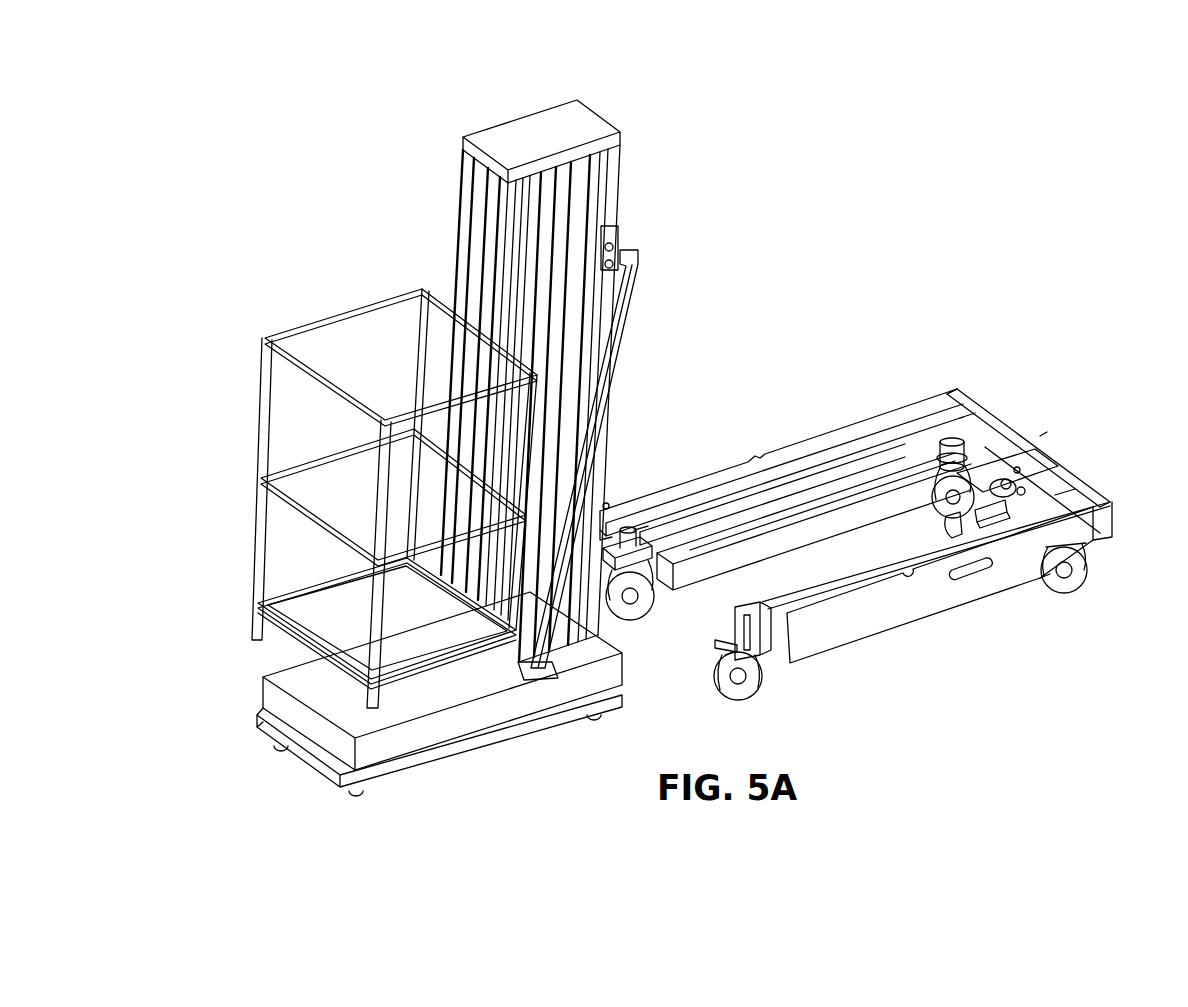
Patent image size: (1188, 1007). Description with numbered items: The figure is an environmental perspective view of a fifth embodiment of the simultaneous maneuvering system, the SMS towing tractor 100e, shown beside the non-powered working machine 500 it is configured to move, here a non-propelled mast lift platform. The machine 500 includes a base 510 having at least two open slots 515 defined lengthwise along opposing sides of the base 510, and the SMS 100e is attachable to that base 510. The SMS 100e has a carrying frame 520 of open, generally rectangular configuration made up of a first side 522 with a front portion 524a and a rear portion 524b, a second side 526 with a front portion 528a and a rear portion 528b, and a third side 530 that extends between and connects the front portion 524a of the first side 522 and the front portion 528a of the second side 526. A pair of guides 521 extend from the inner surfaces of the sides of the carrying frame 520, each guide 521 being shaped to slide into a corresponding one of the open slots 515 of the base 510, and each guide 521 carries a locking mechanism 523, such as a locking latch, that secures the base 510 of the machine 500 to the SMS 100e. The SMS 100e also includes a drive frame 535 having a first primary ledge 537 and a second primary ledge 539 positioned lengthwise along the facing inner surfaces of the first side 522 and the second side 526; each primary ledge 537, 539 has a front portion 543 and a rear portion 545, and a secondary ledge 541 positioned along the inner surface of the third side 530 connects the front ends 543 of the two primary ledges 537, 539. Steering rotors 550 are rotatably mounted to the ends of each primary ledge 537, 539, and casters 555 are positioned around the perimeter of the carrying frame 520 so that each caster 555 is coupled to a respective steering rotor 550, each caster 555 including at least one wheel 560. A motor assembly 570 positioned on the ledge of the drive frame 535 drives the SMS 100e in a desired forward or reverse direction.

The non-powered working machine 500 is at (236, 126).
The base 510 is at (457, 732).
The open slots 515 is at (258, 717).
The simultaneous maneuvering system (SMS towing tractor) 100e is at (799, 315).
The carrying frame 520 is at (1003, 609).
The guides 521 is at (700, 553).
The first side 522 is at (850, 620).
The locking mechanism 523 is at (682, 571).
The front portion of the first side 524a is at (1120, 512).
The rear portion of the first side 524b is at (712, 675).
The second side 526 is at (820, 440).
The front portion of the second side 528a is at (950, 380).
The rear portion of the second side 528b is at (616, 492).
The third side 530 is at (1040, 434).
The drive frame 535 is at (876, 482).
The first primary ledge 537 is at (848, 580).
The second primary ledge 539 is at (730, 508).
The secondary ledge 541 is at (997, 456).
The front portion of the primary ledge 543 is at (950, 415).
The rear portion of the primary ledge 545 is at (643, 514).
The steering rotors 550 is at (940, 455).
The casters 555 is at (646, 597).
The wheel 560 is at (825, 575).
The motor assembly 570 is at (950, 520).